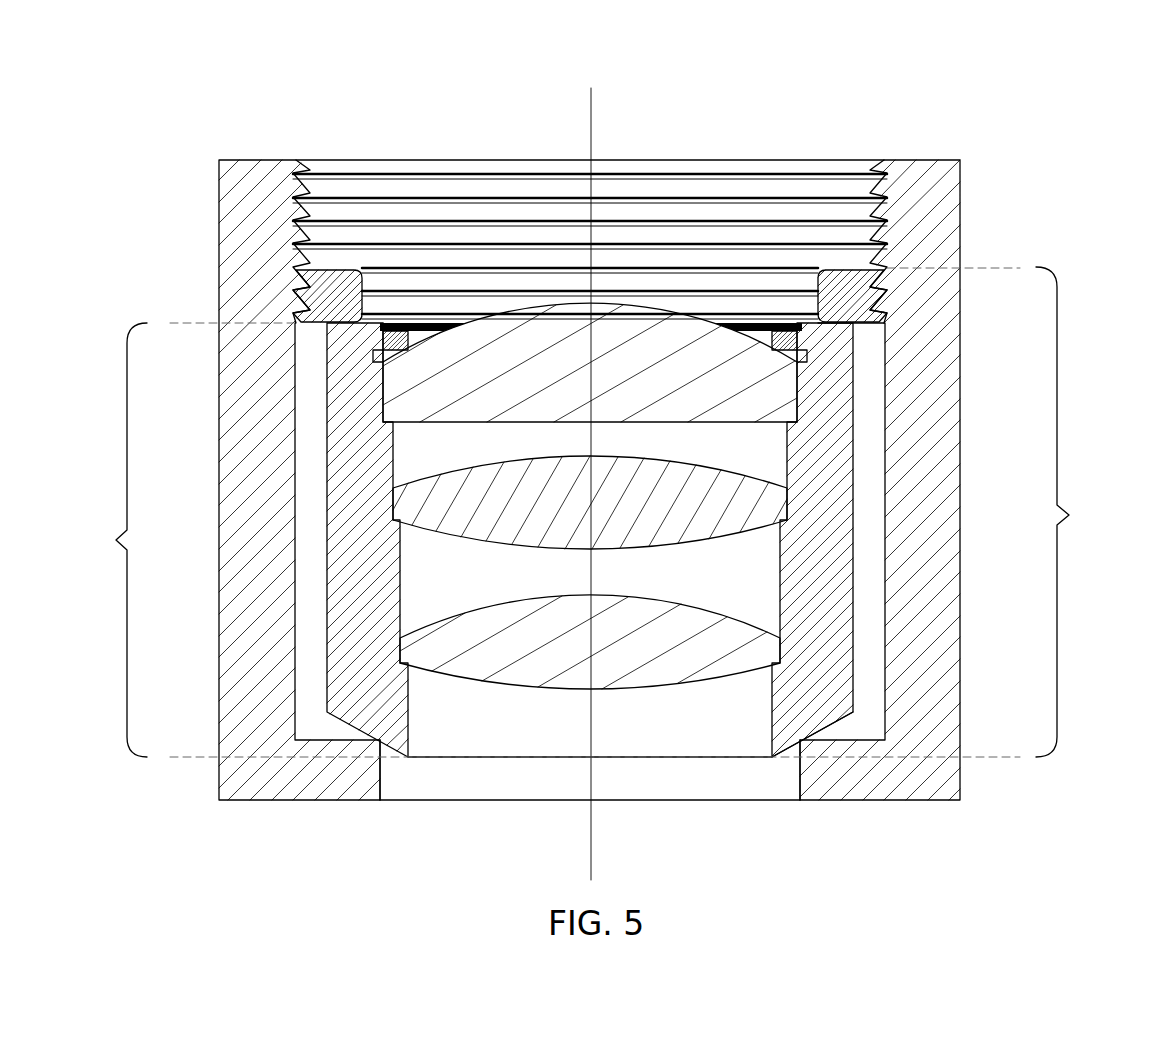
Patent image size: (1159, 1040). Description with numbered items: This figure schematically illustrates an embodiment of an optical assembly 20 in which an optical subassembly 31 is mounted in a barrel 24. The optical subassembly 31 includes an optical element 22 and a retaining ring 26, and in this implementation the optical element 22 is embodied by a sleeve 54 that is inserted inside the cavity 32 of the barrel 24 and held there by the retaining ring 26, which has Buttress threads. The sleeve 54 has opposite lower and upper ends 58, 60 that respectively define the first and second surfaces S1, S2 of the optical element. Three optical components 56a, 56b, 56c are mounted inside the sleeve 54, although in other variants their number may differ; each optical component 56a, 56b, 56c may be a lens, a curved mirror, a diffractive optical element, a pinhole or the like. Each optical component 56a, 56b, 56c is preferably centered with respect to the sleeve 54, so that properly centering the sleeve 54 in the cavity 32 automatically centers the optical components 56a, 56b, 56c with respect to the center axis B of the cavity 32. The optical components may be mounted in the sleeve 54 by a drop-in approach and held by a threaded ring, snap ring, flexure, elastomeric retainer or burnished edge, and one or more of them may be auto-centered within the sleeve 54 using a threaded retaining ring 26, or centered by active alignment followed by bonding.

The optical assembly 20 is at (948, 106).
The optical element 22 is at (467, 479).
The barrel 24 is at (920, 801).
The retaining ring 26 is at (308, 293).
The optical subassembly 31 is at (1072, 512).
The cavity 32 is at (423, 783).
The sleeve 54 is at (393, 714).
The optical component 56a is at (702, 667).
The optical component 56b is at (697, 527).
The optical component 56c is at (701, 403).
The lower end 58 is at (788, 768).
The upper end 60 is at (803, 293).
The center axis B is at (592, 128).
The first surface S1 is at (783, 754).
The second surface S2 is at (837, 324).